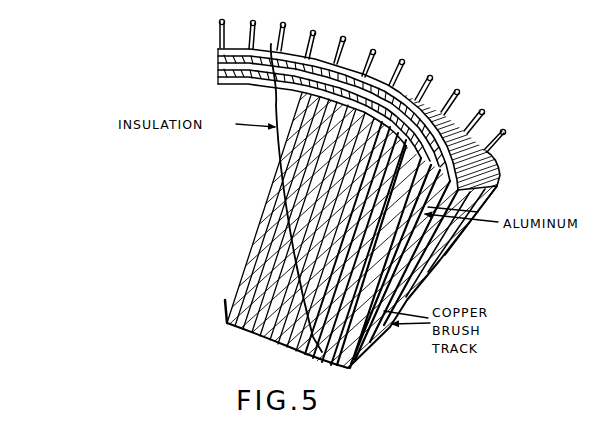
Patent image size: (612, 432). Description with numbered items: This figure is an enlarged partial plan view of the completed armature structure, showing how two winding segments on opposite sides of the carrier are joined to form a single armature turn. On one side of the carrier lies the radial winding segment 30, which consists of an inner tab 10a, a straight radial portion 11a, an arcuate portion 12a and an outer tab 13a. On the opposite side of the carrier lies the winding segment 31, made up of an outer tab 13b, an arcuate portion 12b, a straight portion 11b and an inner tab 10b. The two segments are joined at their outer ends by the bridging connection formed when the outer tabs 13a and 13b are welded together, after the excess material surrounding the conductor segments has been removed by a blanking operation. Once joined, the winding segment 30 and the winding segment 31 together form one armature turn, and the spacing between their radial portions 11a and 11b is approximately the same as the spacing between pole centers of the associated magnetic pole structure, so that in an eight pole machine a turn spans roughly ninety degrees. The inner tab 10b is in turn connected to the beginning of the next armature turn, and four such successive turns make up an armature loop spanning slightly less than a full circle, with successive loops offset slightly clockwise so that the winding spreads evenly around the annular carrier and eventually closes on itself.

The inner tab 10a is at (227, 307).
The inner tab 10b is at (350, 367).
The straight radial portion 11a is at (253, 253).
The straight portion 11b is at (418, 271).
The arcuate portion 12a is at (350, 73).
The arcuate portion 12b is at (483, 124).
The outer tab 13a is at (375, 113).
The outer tab 13b is at (433, 90).
The radial winding segment 30 is at (275, 170).
The winding segment 31 is at (432, 250).